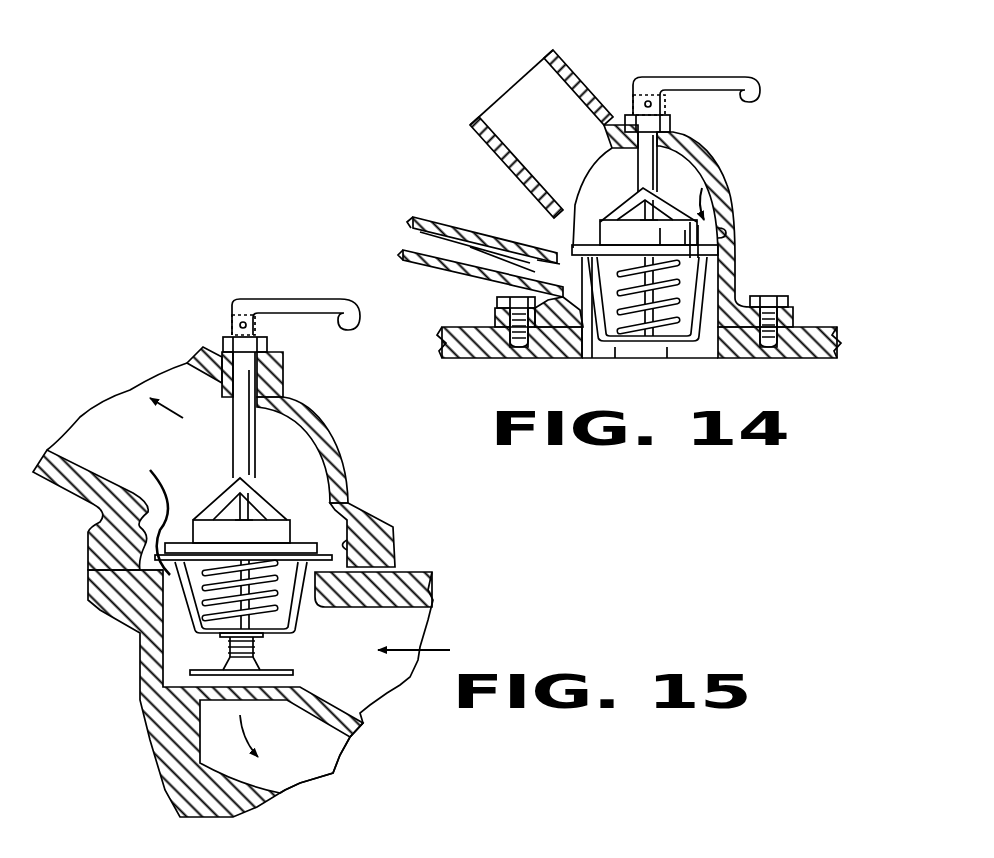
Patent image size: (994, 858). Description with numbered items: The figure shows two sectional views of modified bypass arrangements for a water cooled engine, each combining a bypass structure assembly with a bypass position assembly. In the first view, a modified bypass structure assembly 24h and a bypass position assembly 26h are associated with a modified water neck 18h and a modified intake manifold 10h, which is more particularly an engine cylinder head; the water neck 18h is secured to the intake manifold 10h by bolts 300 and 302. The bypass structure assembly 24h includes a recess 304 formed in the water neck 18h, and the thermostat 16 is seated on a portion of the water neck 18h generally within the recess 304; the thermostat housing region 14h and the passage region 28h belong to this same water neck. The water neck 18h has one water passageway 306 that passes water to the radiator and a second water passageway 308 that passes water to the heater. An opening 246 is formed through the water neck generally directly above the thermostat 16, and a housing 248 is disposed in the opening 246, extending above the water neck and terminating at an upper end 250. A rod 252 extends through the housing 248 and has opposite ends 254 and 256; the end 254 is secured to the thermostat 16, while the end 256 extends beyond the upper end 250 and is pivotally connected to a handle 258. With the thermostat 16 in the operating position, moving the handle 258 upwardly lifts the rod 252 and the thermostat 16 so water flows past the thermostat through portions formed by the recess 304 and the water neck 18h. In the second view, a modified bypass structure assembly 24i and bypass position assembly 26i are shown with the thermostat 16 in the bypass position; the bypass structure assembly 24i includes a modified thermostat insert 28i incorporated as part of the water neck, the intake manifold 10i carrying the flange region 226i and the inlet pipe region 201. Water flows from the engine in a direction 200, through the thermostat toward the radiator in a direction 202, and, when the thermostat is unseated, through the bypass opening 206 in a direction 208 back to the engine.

In FIG. 14, the intake manifold 10h is at (815, 358).
In FIG. 14, the thermostat housing 14h is at (580, 358).
In FIG. 14, the thermostat 16 is at (668, 345).
In FIG. 15, the thermostat 16 is at (220, 490).
In FIG. 14, the water neck 18h is at (737, 207).
In FIG. 14, the bypass structure assembly 24h is at (580, 215).
In FIG. 14, the bypass position assembly 26h is at (673, 66).
In FIG. 14, the outlet passage 28h is at (727, 189).
In FIG. 14, the opening 246 is at (712, 160).
In FIG. 14, the housing 248 is at (624, 108).
In FIG. 14, the upper end 250 is at (622, 105).
In FIG. 14, the rod 252 is at (640, 168).
In FIG. 15, the rod 252 is at (238, 443).
In FIG. 14, the end 254 is at (650, 198).
In FIG. 14, the end 256 is at (647, 100).
In FIG. 14, the handle 258 is at (765, 77).
In FIG. 15, the handle 258 is at (240, 296).
In FIG. 14, the bolt 300 is at (497, 300).
In FIG. 14, the bolt 302 is at (780, 303).
In FIG. 14, the recess 304 is at (722, 233).
In FIG. 14, the water passageway 306 is at (545, 215).
In FIG. 14, the water passageway 308 is at (453, 220).
In FIG. 15, the intake manifold 10i is at (422, 577).
In FIG. 15, the bypass structure assembly 24i is at (130, 550).
In FIG. 15, the bypass position assembly 26i is at (305, 418).
In FIG. 15, the thermostat insert 28i is at (130, 560).
In FIG. 15, the direction 200 is at (430, 650).
In FIG. 15, the inlet pipe 201 is at (83, 465).
In FIG. 15, the direction 202 is at (168, 405).
In FIG. 15, the bypass opening 206 is at (282, 790).
In FIG. 15, the direction 208 is at (245, 737).
In FIG. 15, the flange 226i is at (383, 532).